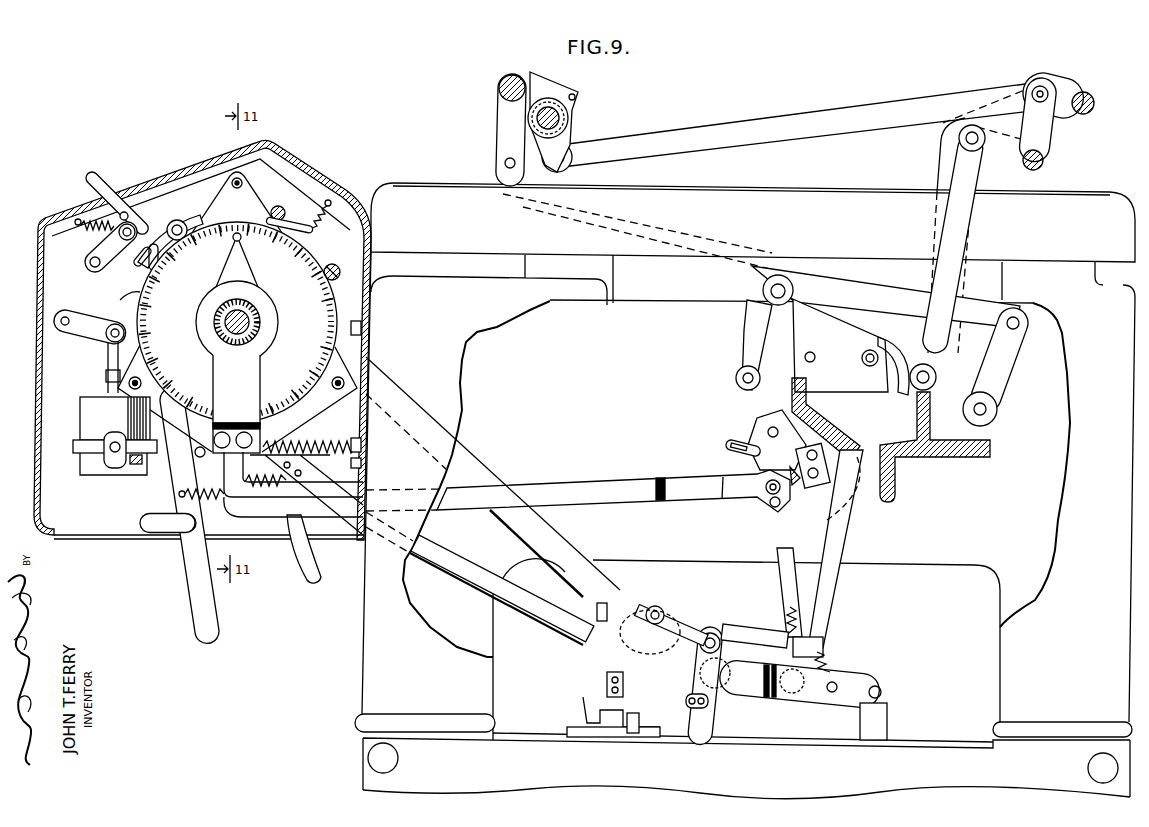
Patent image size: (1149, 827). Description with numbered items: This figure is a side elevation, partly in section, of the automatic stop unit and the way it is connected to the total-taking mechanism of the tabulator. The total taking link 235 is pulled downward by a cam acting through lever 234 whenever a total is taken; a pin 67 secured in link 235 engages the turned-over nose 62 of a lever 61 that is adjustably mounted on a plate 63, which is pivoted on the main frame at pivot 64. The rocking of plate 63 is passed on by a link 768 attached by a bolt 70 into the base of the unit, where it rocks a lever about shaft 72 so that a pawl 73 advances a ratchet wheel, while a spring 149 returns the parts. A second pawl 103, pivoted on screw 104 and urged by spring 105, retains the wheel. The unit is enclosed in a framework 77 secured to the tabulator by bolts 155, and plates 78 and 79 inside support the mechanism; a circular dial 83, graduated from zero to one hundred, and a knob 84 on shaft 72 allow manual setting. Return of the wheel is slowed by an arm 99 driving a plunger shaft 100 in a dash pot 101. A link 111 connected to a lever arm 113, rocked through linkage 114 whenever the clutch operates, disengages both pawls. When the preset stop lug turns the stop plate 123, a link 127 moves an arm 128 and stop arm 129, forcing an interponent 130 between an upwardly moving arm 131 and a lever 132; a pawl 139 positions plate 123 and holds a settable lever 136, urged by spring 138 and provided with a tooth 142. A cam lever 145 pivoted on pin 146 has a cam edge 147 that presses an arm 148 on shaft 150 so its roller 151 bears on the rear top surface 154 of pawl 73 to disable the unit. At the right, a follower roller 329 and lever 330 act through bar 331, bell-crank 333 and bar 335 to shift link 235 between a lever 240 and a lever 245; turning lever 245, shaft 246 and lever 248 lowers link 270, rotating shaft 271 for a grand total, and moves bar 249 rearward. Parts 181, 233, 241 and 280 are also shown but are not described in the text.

The lever 61 is at (727, 446).
The turned-over nose 62 is at (830, 507).
The plate 63 is at (758, 437).
The pivot 64 is at (768, 430).
The pin 67 is at (892, 476).
The bolt 70 is at (768, 494).
The shaft 72 is at (240, 335).
The pawl 73 is at (193, 226).
The enclosing framework 77 is at (310, 172).
The plate 78 is at (258, 192).
The back plate 79 is at (210, 187).
The circular dial 83 is at (336, 281).
The knob 84 is at (255, 318).
The arm 99 is at (77, 333).
The plunger shaft 100 is at (106, 378).
The dash pot 101 is at (95, 421).
The second pawl 103 is at (282, 202).
The screw 104 is at (286, 228).
The spring 105 is at (322, 220).
The link 111 is at (478, 463).
The lever arm 113 is at (847, 673).
The linkage 114 is at (884, 722).
The stop plate 123 is at (278, 479).
The link 127 is at (468, 567).
The arm 128 is at (682, 630).
The stop arm 129 is at (712, 722).
The interponent 130 is at (590, 707).
The arm 131 is at (637, 725).
The lever 132 is at (607, 684).
The settable lever 136 is at (190, 590).
The spring 138 is at (205, 497).
The pawl 139 is at (302, 560).
The tooth 142 is at (196, 456).
The cam lever 145 is at (100, 180).
The pin 146 is at (132, 217).
The cam edge 147 is at (148, 264).
The pivoted arm 148 is at (130, 262).
The spring 149 is at (340, 446).
The shaft 150 is at (94, 266).
The roller 151 is at (112, 235).
The rear top surface 154 is at (131, 300).
The bolts 155 is at (366, 328).
The pivot 181 is at (1046, 168).
The roller 233 is at (653, 612).
The lever 234 is at (767, 697).
The total taking link 235 is at (851, 520).
The lever 240 is at (877, 342).
The link 241 is at (927, 277).
The lever 245 is at (908, 385).
The shaft 246 is at (988, 411).
The lever 248 is at (1003, 380).
The bar 249 is at (832, 277).
The link 270 is at (944, 160).
The shaft 271 is at (1088, 113).
The pawl 280 is at (736, 626).
The follower roller 329 is at (606, 604).
The lever 330 is at (672, 620).
The bar 331 is at (750, 323).
The bell-crank 333 is at (770, 290).
The bar 335 is at (740, 377).
The link 768 is at (560, 490).